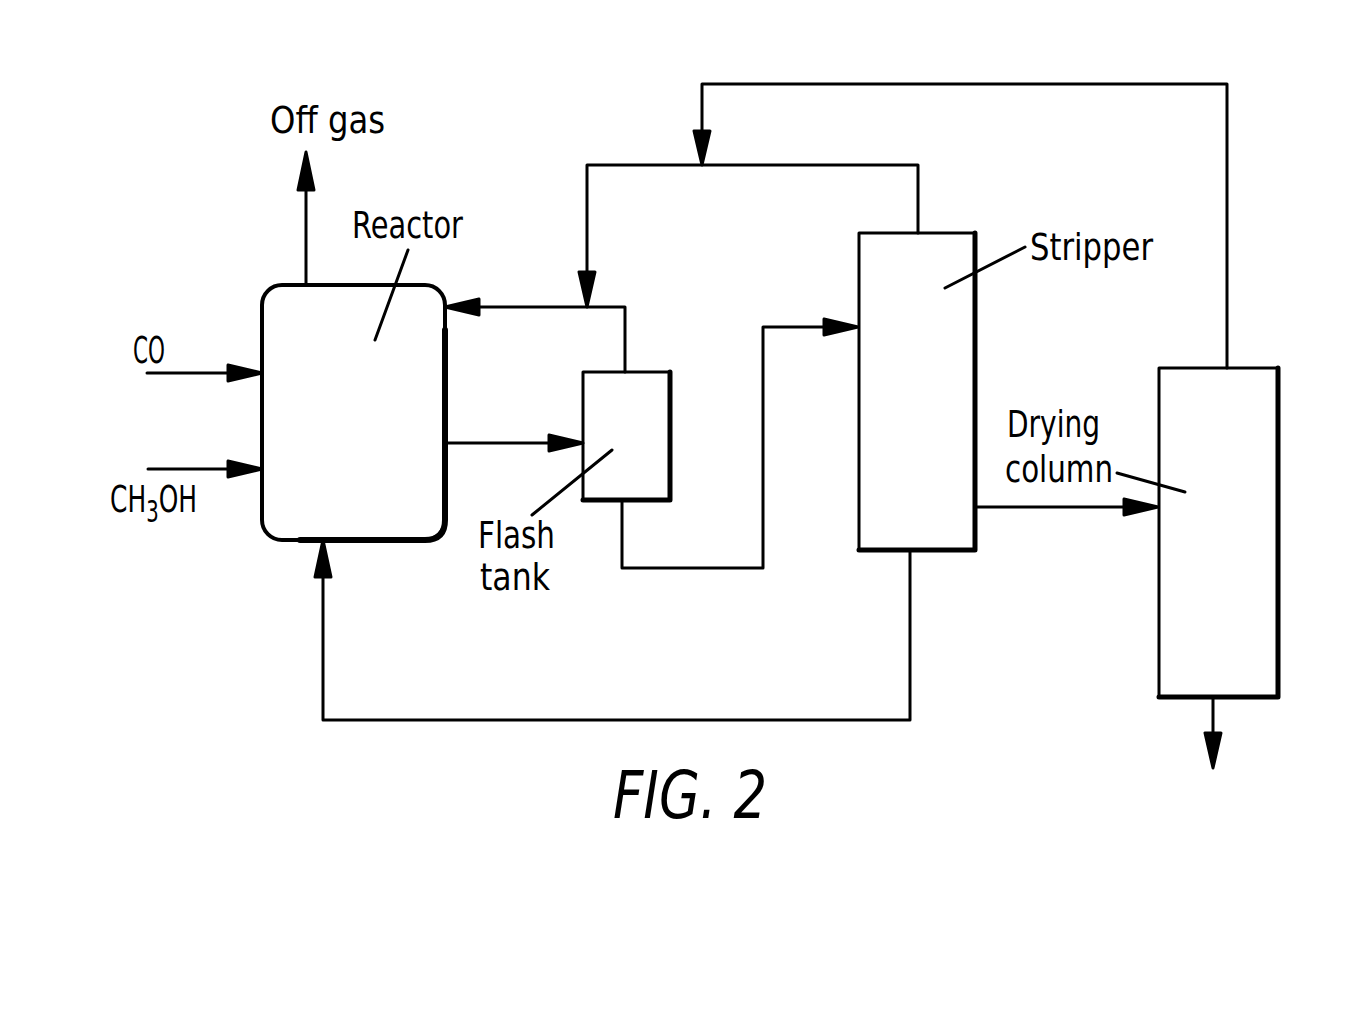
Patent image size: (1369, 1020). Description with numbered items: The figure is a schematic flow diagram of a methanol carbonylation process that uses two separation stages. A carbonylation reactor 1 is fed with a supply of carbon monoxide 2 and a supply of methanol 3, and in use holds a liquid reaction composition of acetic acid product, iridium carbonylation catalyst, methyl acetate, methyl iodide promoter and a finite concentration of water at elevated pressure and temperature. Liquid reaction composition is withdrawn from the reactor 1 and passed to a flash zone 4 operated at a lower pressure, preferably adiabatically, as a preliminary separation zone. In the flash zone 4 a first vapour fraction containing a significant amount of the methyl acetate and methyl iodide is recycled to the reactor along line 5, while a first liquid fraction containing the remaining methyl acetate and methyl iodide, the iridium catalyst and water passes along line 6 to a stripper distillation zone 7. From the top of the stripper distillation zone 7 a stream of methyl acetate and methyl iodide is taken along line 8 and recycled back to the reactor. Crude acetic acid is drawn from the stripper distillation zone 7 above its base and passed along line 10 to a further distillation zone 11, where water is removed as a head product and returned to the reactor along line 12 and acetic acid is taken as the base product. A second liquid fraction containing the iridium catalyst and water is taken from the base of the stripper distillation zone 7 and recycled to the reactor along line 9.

The carbonylation reactor 1 is at (302, 503).
The supply of carbon monoxide 2 is at (170, 375).
The supply of methanol 3 is at (197, 468).
The flash zone 4 is at (673, 427).
The line 5 is at (520, 305).
The line 6 is at (712, 572).
The stripper distillation zone 7 is at (977, 347).
The line 8 is at (765, 167).
The line 9 is at (912, 682).
The line 10 is at (1048, 510).
The distillation zone 11 is at (1280, 547).
The line 12 is at (1227, 258).